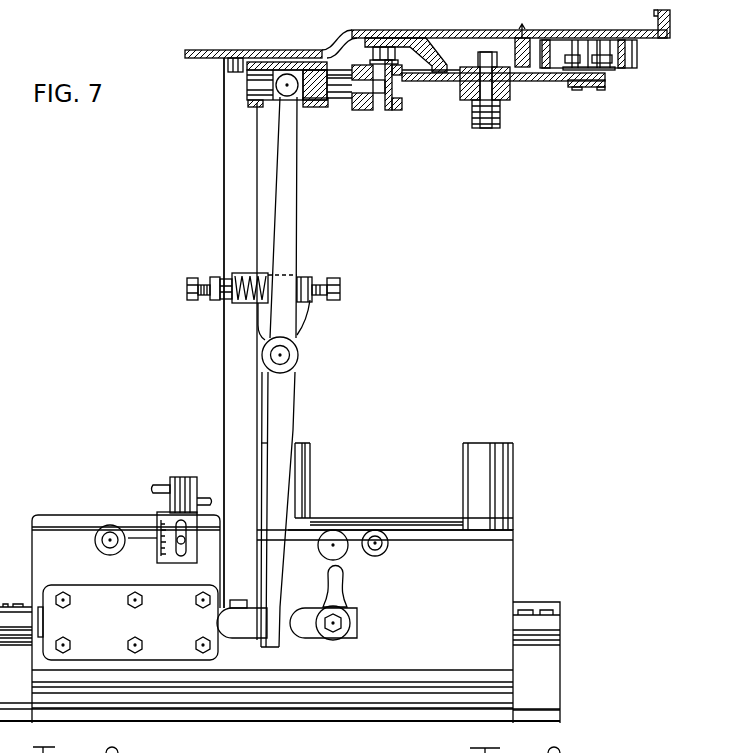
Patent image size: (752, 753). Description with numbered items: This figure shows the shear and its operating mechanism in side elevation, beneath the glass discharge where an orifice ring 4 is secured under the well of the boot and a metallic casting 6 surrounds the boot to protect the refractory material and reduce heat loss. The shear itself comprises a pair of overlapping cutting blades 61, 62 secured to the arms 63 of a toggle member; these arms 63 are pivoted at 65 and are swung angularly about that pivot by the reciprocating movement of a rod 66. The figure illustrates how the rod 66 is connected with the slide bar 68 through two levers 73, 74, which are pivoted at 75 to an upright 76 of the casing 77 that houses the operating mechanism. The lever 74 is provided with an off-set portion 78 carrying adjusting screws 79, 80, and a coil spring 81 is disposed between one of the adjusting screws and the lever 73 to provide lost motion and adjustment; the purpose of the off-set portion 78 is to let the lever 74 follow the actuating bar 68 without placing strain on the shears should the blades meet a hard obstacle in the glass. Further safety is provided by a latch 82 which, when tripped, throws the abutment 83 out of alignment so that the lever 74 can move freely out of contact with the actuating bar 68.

The orifice ring 4 is at (638, 58).
The metallic casting 6 is at (672, 25).
The cutting blade 61 is at (617, 70).
The cutting blade 62 is at (607, 73).
The arms of toggle member 63 is at (533, 83).
The pivot 65 is at (483, 130).
The rod 66 is at (353, 110).
The slide bar 68 is at (227, 630).
The lever 73 is at (297, 203).
The lever 74 is at (285, 407).
The pivot 75 is at (283, 355).
The upright 76 is at (230, 335).
The casing 77 is at (357, 518).
The off-set portion 78 is at (307, 275).
The adjusting screw 79 is at (340, 287).
The adjusting screw 80 is at (188, 285).
The coil spring 81 is at (247, 273).
The latch 82 is at (343, 577).
The abutment 83 is at (288, 607).